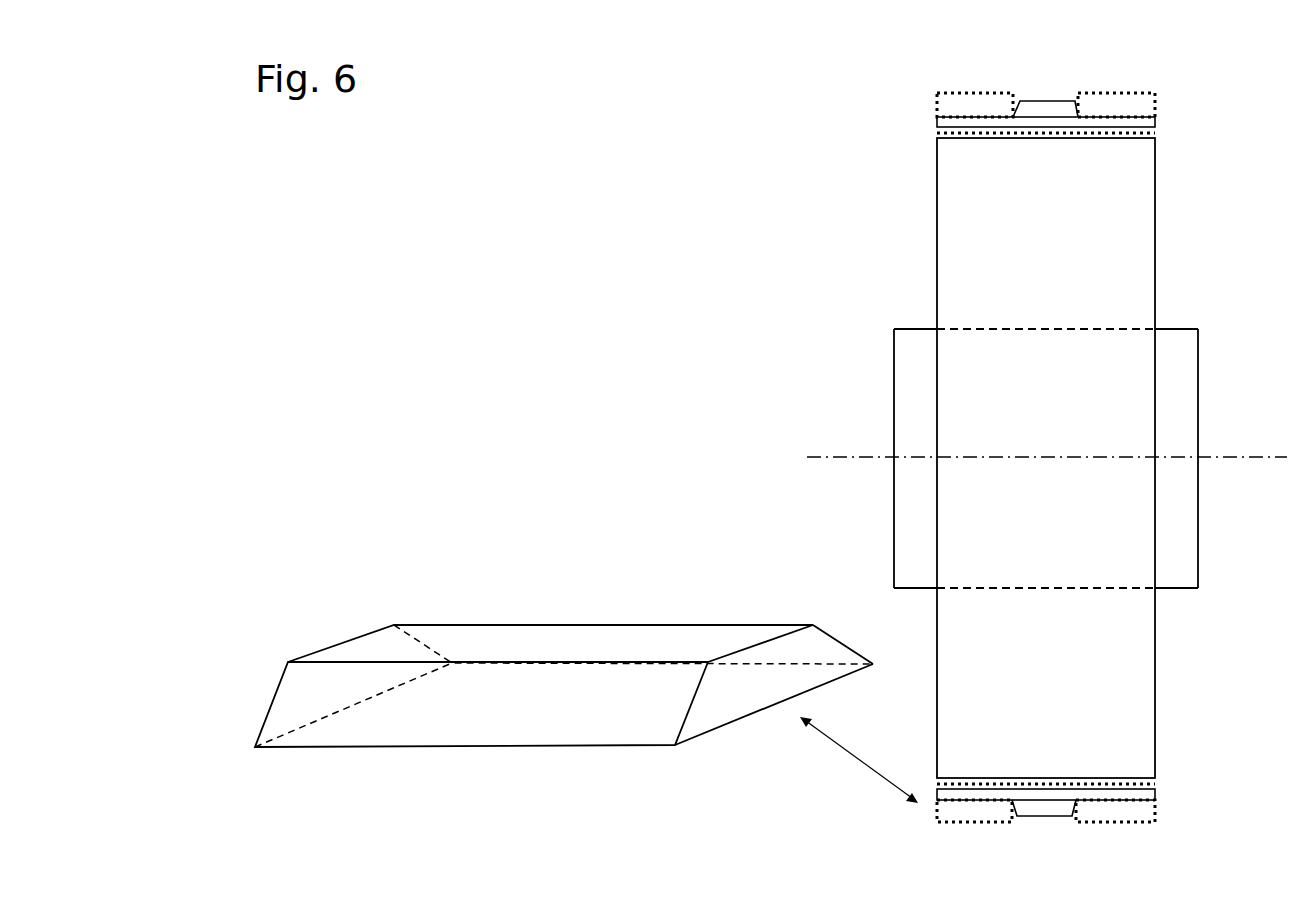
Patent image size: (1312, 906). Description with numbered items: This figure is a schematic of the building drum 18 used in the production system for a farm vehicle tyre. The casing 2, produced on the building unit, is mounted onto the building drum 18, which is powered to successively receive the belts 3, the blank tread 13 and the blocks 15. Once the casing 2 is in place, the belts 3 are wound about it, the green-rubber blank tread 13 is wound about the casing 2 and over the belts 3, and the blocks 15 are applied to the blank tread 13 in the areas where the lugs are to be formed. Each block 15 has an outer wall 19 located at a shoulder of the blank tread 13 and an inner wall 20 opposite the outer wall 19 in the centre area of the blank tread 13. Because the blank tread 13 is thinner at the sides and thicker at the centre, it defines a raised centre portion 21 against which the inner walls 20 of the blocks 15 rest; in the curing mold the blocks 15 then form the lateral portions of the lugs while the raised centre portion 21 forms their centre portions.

The casing 2 is at (1214, 668).
The belts 3 is at (1160, 132).
The blank tread 13 is at (922, 121).
The blocks 15 is at (960, 106).
The building drum 18 is at (1180, 381).
The outer wall 19 is at (362, 648).
The inner wall 20 is at (737, 695).
The raised centre portion 21 is at (1045, 110).